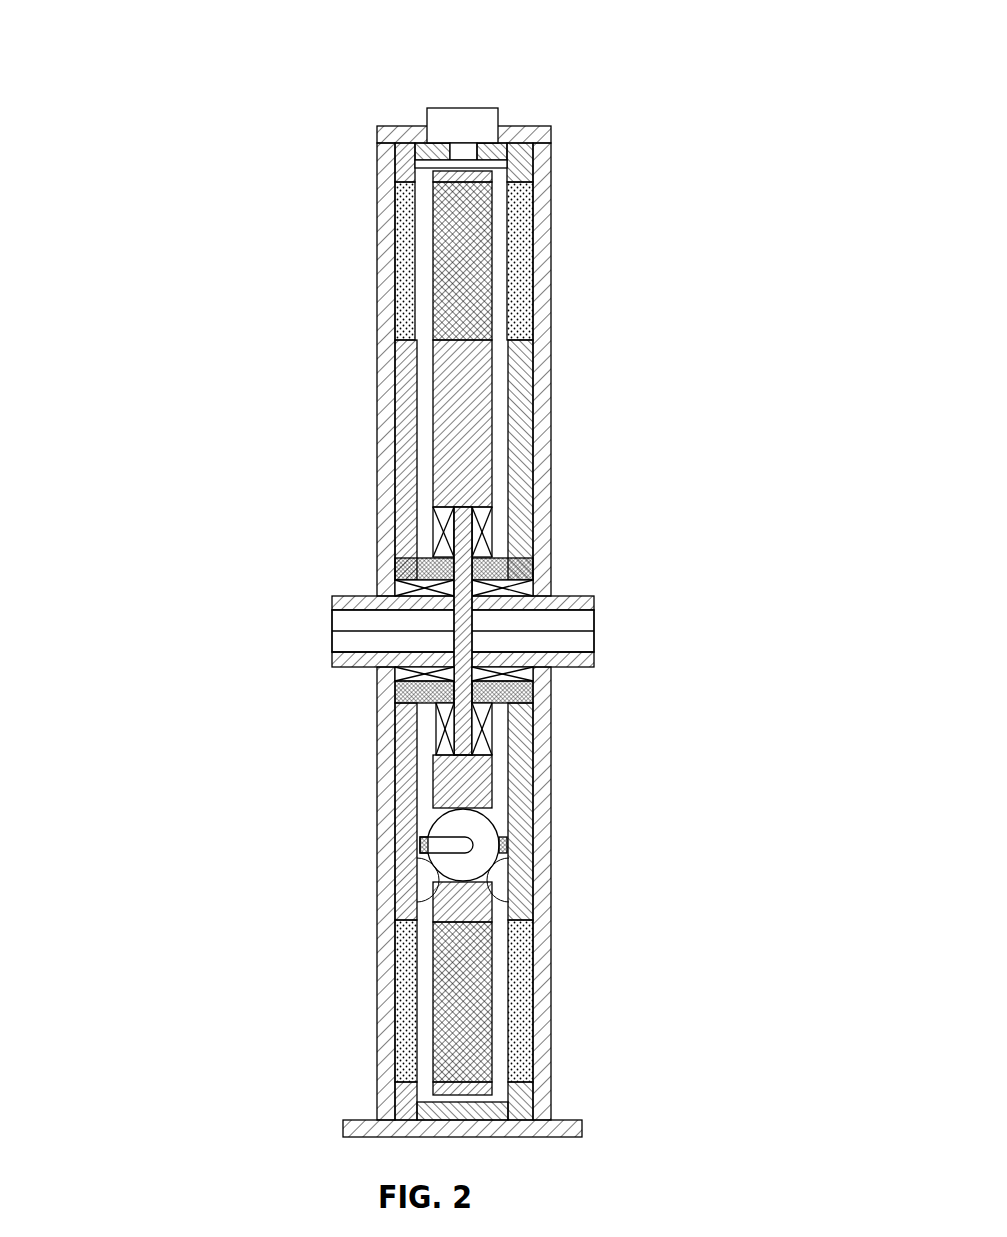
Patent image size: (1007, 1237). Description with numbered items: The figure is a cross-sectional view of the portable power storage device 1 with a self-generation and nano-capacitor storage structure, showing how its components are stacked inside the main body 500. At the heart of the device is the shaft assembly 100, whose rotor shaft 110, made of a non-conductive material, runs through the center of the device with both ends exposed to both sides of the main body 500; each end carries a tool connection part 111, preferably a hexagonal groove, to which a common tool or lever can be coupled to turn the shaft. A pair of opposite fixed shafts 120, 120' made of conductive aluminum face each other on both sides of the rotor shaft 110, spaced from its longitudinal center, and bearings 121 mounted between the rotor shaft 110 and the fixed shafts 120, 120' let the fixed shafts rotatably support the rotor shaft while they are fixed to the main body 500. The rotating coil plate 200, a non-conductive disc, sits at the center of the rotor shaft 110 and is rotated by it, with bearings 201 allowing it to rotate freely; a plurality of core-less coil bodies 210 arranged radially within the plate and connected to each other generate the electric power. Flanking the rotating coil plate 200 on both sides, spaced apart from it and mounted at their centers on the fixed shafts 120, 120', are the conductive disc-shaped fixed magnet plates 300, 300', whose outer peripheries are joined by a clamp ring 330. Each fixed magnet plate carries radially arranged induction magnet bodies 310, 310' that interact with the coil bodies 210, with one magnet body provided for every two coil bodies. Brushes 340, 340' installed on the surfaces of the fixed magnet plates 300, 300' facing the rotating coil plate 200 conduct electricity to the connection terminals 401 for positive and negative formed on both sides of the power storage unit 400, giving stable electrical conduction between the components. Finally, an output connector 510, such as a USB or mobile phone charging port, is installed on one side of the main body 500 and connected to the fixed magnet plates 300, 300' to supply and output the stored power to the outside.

The portable power storage device 1 is at (75, 47).
The shaft assembly 100 is at (292, 661).
The rotor shaft 110 is at (477, 660).
The tool connection part 111 is at (343, 644).
The fixed shaft 120 is at (340, 565).
The fixed shaft 120' is at (575, 554).
The bearing 121 is at (533, 690).
The rotating coil plate 200 is at (450, 367).
The bearing 201 is at (433, 528).
The coil body 210 is at (433, 210).
The fixed magnet plate 300 is at (317, 460).
The fixed magnet plate 300' is at (614, 460).
The induction magnet body 310 is at (319, 261).
The induction magnet body 310' is at (621, 261).
The clamp ring 330 is at (441, 142).
The brush 340 is at (379, 996).
The brush 340' is at (592, 989).
The power storage unit 400 is at (477, 827).
The connection terminal 401 is at (453, 843).
The main body 500 is at (548, 177).
The output connector 510 is at (468, 115).